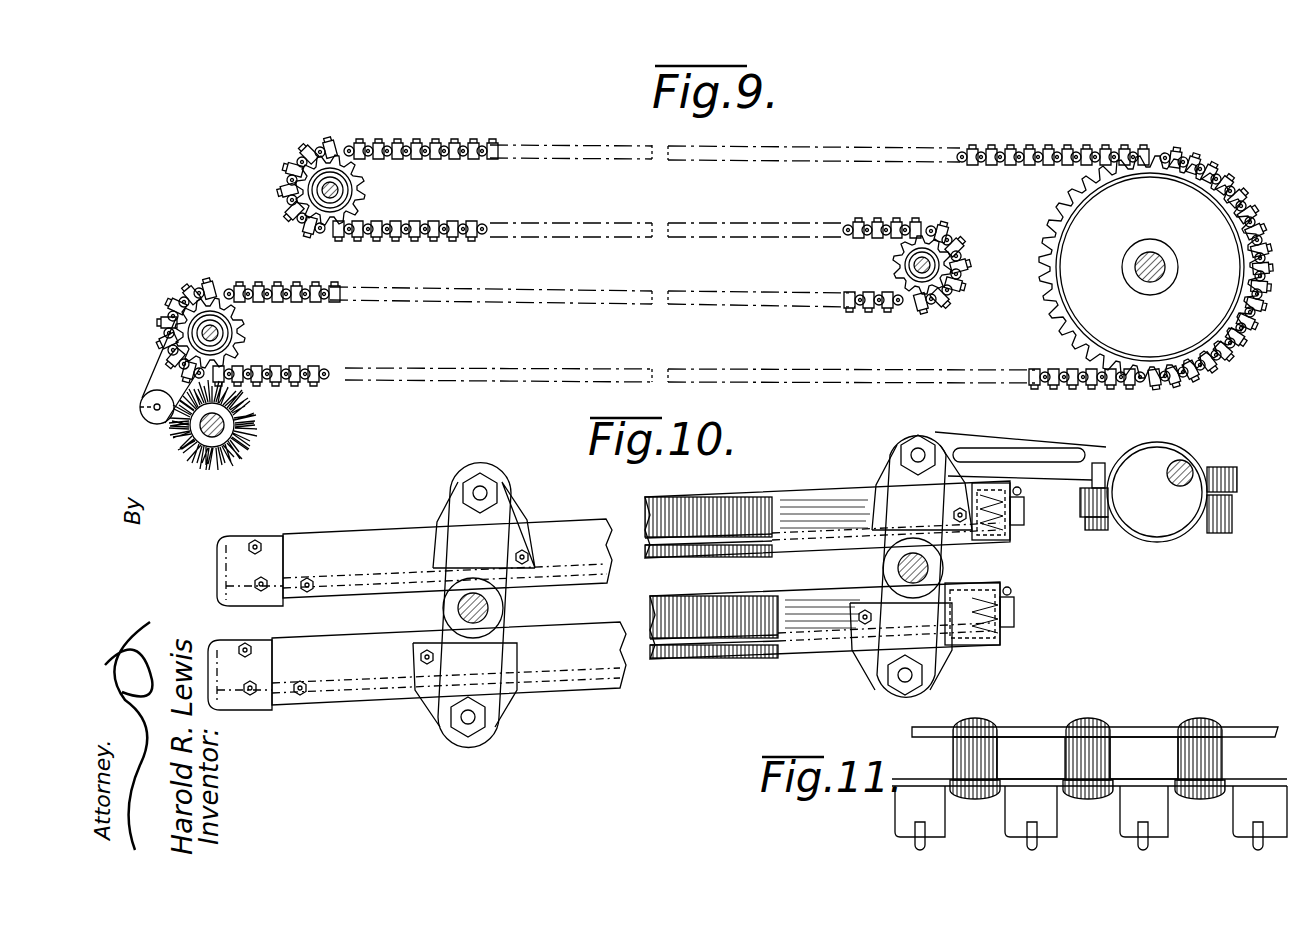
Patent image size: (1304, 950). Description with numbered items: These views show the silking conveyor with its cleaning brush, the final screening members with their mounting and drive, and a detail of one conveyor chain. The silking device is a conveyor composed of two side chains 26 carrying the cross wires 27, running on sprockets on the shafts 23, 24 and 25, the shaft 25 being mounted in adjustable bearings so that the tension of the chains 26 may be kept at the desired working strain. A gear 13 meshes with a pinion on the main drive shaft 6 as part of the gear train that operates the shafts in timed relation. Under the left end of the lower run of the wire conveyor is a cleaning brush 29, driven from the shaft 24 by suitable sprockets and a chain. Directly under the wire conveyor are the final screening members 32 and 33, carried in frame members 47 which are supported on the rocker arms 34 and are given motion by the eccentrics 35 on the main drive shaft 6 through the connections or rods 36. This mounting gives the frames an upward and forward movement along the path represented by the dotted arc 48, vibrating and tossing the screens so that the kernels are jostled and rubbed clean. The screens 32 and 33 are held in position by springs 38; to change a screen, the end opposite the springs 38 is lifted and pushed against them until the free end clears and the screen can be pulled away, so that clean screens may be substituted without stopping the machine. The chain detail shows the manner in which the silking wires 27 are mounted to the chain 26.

In FIG. 10, the main drive shaft 6 is at (1182, 462).
In FIG. 9, the gear 13 is at (1092, 287).
In FIG. 9, the shaft 23 is at (888, 262).
In FIG. 9, the shaft 24 is at (225, 333).
In FIG. 9, the shaft 25 is at (345, 190).
In FIG. 9, the side chains 26 is at (362, 236).
In FIG. 11, the side chains 26 is at (1135, 728).
In FIG. 9, the cross wires 27 is at (462, 149).
In FIG. 11, the cross wires 27 is at (913, 840).
In FIG. 9, the cleaning brush 29 is at (258, 426).
In FIG. 10, the final screening member 32 is at (655, 540).
In FIG. 10, the final screening member 33 is at (660, 634).
In FIG. 10, the rocker arms 34 is at (470, 556).
In FIG. 10, the eccentrics 35 is at (1170, 527).
In FIG. 10, the connections 36 is at (1033, 442).
In FIG. 10, the springs 38 is at (980, 593).
In FIG. 10, the frame members 47 is at (725, 506).
In FIG. 10, the dotted arc 48 is at (545, 526).